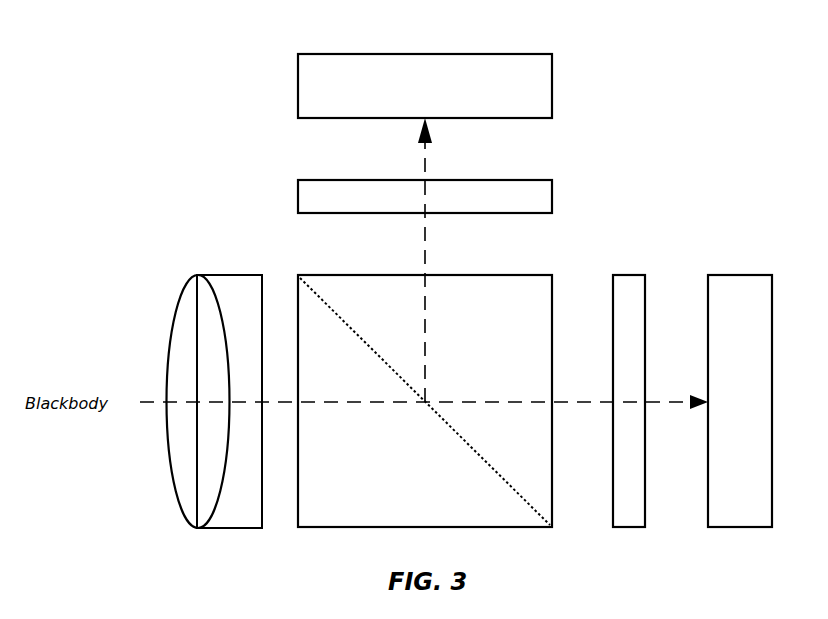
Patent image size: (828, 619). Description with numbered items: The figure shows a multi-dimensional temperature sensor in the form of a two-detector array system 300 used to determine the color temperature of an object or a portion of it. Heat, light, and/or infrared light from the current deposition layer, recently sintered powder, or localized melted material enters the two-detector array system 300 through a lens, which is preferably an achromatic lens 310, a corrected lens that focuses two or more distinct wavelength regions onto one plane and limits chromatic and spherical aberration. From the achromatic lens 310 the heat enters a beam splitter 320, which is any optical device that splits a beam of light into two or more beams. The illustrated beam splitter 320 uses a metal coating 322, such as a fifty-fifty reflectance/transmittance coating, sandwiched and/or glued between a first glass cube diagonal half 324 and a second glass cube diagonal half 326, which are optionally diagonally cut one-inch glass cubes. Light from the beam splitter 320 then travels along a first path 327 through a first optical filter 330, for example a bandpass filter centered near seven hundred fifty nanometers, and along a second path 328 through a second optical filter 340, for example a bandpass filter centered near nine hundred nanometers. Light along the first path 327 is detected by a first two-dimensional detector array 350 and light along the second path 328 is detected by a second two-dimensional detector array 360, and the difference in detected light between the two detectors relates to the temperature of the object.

The two-detector array system 300 is at (205, 60).
The achromatic lens 310 is at (262, 275).
The beam splitter 320 is at (518, 275).
The metal coating 322 is at (343, 318).
The glass cube diagonal half 324 is at (386, 477).
The second prism portion 326 is at (512, 334).
The first path 327 is at (426, 345).
The second path 328 is at (477, 400).
The first optical filter 330 is at (518, 180).
The second optical filter 340 is at (630, 275).
The first two-dimensional detector array 350 is at (518, 54).
The second two-dimensional detector array 360 is at (740, 275).